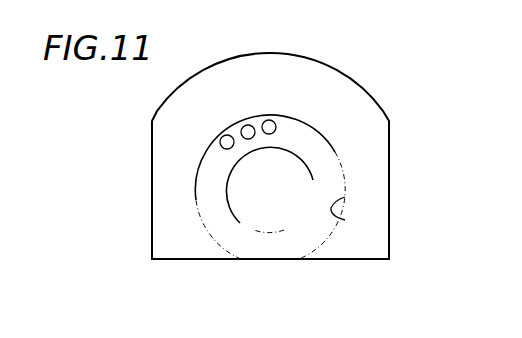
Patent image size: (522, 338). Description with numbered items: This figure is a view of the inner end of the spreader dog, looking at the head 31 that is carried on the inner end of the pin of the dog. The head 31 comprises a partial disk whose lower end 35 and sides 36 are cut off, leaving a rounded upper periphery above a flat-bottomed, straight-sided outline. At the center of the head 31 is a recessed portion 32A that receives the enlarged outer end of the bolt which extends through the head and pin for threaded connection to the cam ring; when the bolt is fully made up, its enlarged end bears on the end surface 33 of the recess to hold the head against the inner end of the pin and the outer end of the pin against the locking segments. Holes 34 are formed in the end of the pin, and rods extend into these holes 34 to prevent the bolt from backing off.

The head 31 is at (316, 61).
The recessed portion 32A is at (345, 220).
The end surface 33 is at (322, 153).
The holes 34 is at (222, 146).
The lower end 35 is at (270, 283).
The sides 36 is at (389, 177).